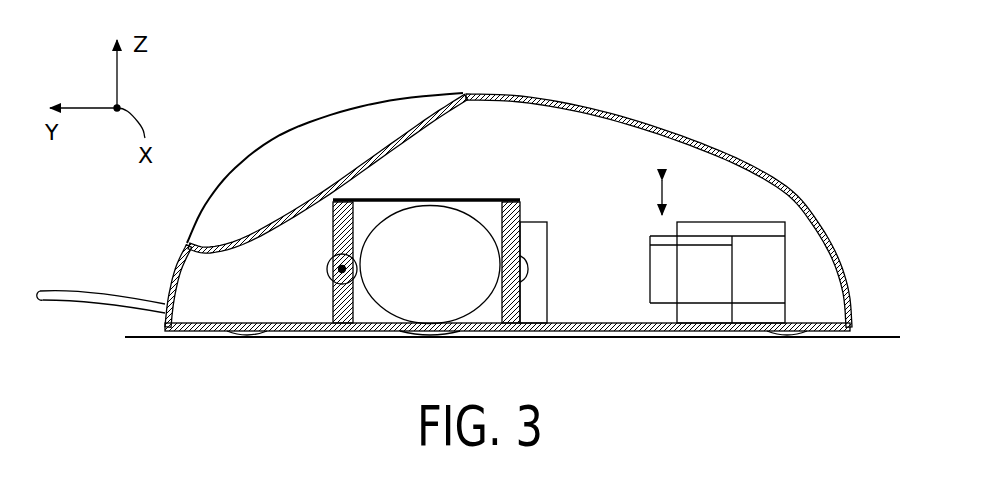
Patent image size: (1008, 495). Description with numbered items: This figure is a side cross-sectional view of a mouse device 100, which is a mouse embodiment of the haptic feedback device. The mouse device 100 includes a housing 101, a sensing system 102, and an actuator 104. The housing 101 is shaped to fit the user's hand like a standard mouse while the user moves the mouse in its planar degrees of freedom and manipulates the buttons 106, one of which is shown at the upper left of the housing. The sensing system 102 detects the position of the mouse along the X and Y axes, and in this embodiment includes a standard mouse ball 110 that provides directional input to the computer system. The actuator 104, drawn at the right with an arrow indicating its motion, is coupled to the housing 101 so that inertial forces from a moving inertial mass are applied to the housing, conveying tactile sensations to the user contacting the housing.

The mouse device 100 is at (390, 68).
The housing 101 is at (842, 250).
The sensing system 102 is at (307, 291).
The actuator 104 is at (726, 191).
The buttons 106 is at (307, 193).
The mouse ball 110 is at (442, 285).